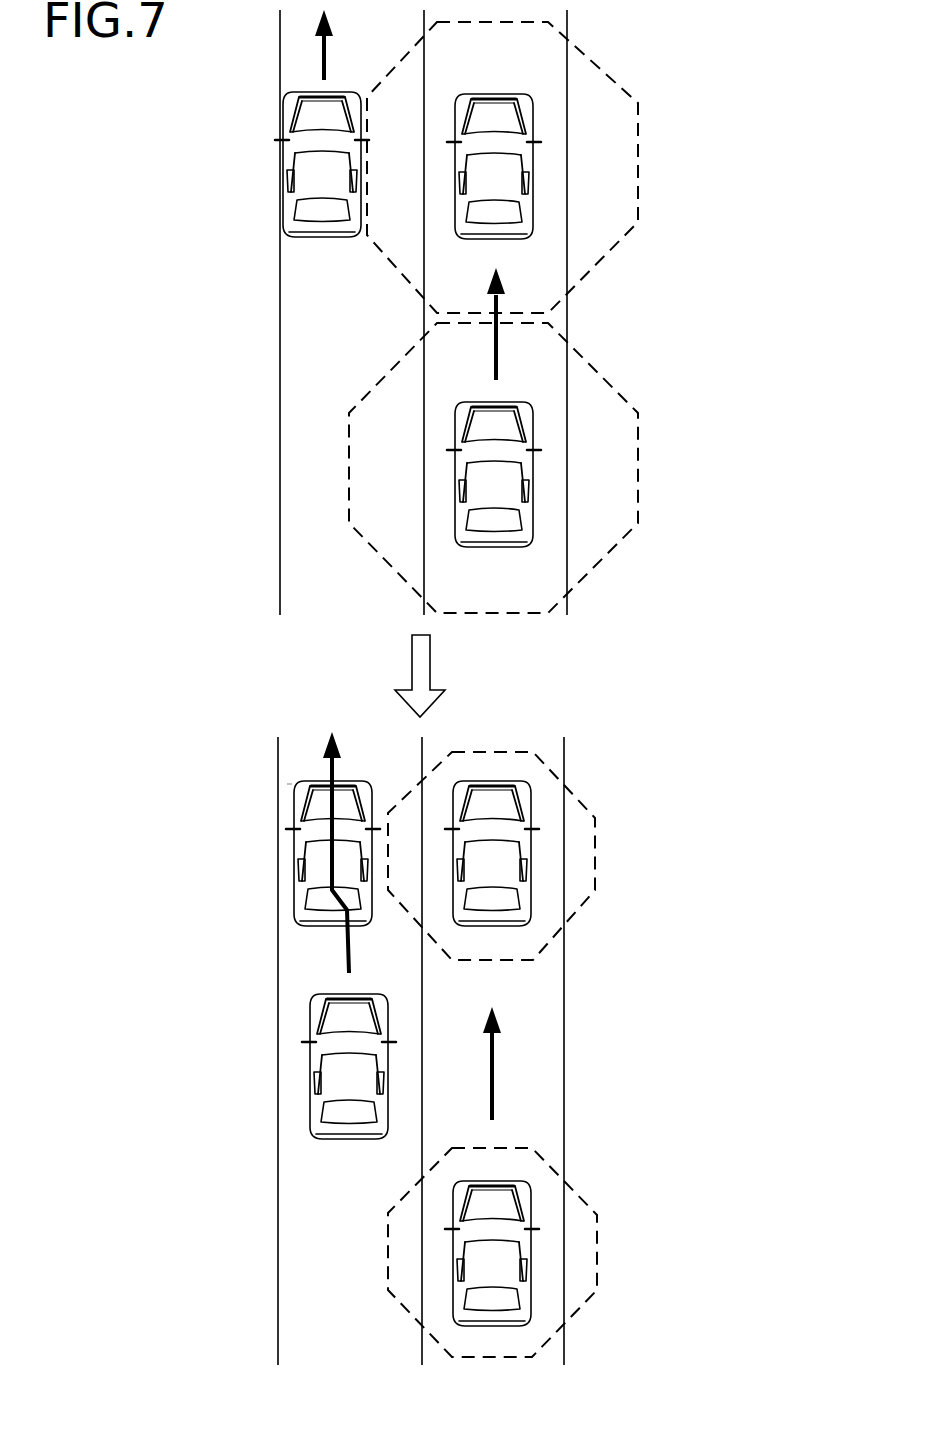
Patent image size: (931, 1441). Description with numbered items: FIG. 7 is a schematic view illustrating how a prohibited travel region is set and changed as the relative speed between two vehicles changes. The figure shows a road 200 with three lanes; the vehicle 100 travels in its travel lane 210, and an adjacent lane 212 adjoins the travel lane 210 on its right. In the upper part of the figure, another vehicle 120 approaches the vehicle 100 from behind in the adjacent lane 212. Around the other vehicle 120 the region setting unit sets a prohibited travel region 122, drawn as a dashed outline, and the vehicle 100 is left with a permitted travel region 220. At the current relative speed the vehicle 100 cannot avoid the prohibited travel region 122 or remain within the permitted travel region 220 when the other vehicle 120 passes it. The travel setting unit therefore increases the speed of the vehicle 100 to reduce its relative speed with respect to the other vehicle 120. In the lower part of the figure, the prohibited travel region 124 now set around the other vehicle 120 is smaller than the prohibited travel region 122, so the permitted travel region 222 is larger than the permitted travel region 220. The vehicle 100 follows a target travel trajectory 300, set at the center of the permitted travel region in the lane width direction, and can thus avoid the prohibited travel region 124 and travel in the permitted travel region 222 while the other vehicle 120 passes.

The vehicle 100 is at (288, 125).
The other vehicle 120 is at (533, 148).
The prohibited travel region 122 is at (640, 178).
The prohibited travel region 124 is at (597, 872).
The road 200 is at (280, 432).
The travel lane 210 is at (298, 520).
The adjacent lane 212 is at (537, 352).
The permitted travel region 220 is at (290, 88).
The permitted travel region 222 is at (287, 784).
The target travel trajectory 300 is at (328, 765).